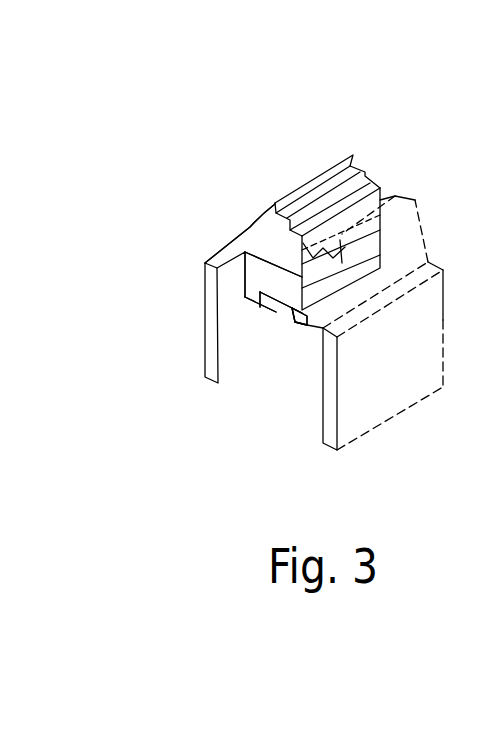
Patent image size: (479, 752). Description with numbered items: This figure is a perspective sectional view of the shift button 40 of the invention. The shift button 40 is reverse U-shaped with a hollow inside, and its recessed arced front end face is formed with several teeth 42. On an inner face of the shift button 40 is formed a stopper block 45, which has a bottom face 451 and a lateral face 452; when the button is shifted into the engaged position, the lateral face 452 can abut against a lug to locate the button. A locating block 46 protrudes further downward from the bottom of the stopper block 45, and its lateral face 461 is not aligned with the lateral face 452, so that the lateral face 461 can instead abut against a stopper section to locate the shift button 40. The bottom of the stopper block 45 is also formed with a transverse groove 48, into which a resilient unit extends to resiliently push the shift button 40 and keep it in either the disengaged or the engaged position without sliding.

The shift button 40 is at (432, 143).
The teeth 42 is at (332, 190).
The stopper block 45 is at (245, 295).
The bottom face 451 is at (280, 314).
The lateral face 452 is at (252, 272).
The locating block 46 is at (303, 322).
The lateral face 461 is at (291, 315).
The transverse groove 48 is at (288, 308).